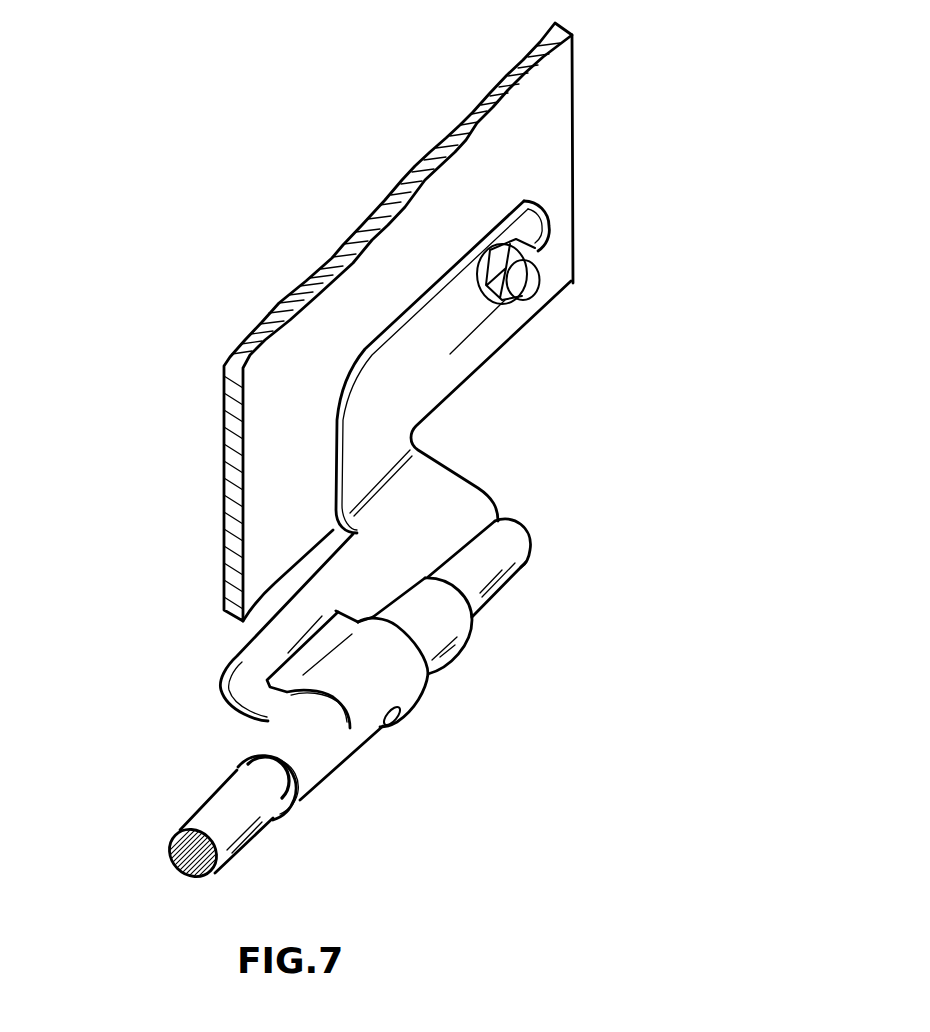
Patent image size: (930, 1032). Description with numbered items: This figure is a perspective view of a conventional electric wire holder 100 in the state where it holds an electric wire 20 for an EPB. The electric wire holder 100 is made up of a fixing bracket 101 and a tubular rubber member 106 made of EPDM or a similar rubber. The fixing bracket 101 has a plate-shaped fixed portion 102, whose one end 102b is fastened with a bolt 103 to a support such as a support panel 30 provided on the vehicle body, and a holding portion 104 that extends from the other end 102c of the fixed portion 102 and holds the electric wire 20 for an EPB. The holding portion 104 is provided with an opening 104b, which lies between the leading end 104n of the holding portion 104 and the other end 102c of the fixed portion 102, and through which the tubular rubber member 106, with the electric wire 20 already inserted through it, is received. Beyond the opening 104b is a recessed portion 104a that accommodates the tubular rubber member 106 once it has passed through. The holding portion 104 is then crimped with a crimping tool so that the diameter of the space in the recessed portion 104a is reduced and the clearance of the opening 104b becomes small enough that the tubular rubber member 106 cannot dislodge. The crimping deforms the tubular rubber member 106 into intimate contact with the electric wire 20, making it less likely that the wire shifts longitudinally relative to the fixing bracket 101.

The support panel 30 is at (362, 226).
The electric wire holder 100 is at (190, 650).
The fixing bracket 101 is at (413, 476).
The fixed portion 102 is at (453, 357).
The one end of the fixed portion 102b is at (533, 240).
The other end of the fixed portion 102c is at (245, 720).
The bolt 103 is at (525, 283).
The holding portion 104 is at (329, 668).
The recessed portion 104a is at (368, 750).
The opening 104b is at (252, 700).
The leading end of the holding portion 104n is at (312, 671).
The tubular rubber member 106 is at (310, 773).
The electric wire for an EPB 20 is at (237, 823).